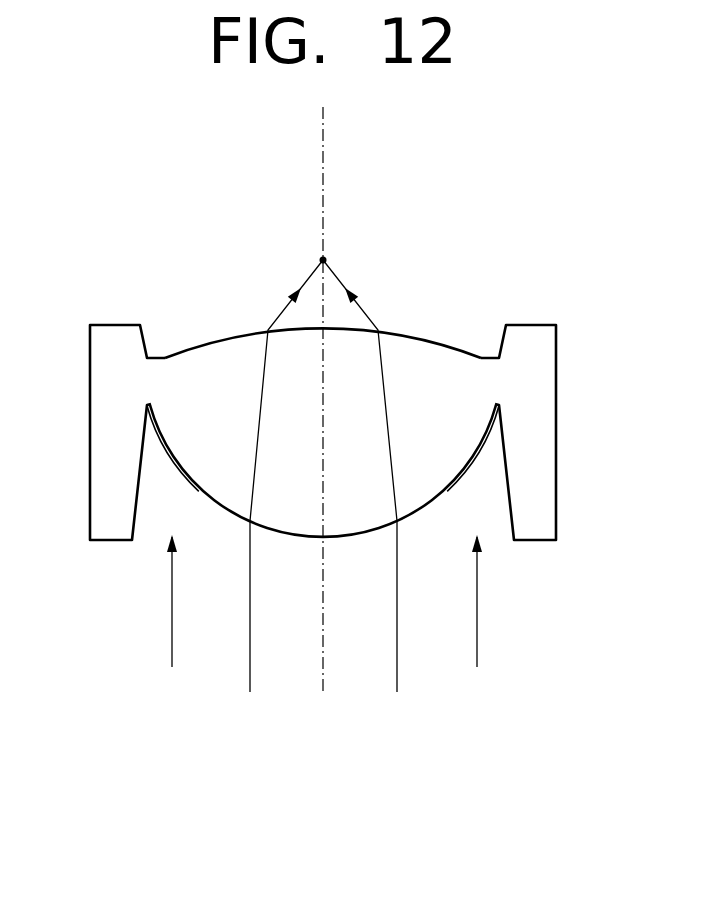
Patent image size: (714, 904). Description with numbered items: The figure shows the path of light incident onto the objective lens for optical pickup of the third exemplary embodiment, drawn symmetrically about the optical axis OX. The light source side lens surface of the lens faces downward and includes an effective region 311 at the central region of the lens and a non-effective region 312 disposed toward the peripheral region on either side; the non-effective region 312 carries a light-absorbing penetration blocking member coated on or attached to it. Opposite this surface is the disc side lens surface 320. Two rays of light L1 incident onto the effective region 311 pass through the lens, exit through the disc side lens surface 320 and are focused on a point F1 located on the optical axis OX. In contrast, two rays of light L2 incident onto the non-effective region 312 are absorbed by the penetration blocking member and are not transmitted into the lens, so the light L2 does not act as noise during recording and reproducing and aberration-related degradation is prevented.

The disc side lens surface 320 is at (440, 335).
The effective region 311 is at (357, 538).
The non-effective region 312 is at (158, 430).
The optical axis OX is at (323, 107).
The point F1 is at (327, 260).
The light L1 is at (250, 692).
The light L2 is at (172, 667).